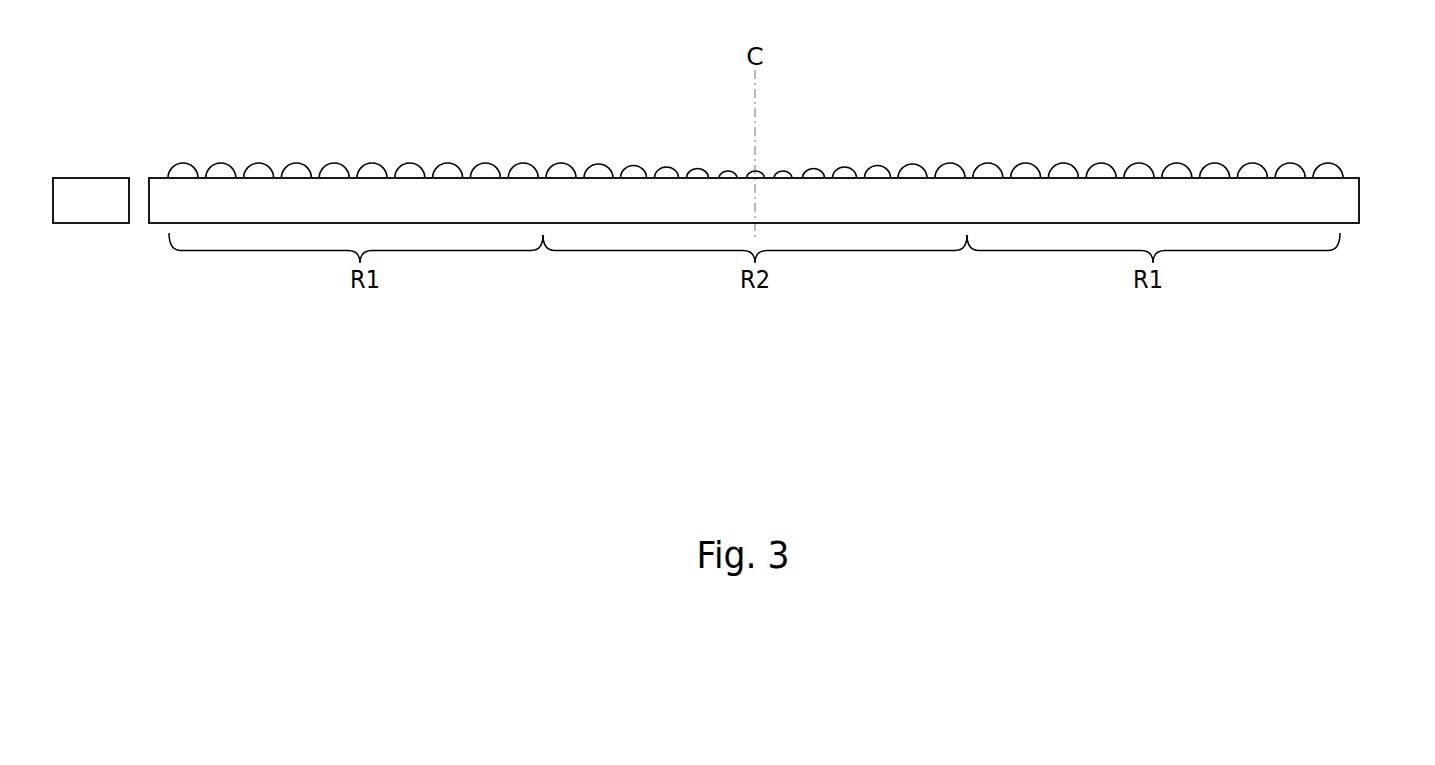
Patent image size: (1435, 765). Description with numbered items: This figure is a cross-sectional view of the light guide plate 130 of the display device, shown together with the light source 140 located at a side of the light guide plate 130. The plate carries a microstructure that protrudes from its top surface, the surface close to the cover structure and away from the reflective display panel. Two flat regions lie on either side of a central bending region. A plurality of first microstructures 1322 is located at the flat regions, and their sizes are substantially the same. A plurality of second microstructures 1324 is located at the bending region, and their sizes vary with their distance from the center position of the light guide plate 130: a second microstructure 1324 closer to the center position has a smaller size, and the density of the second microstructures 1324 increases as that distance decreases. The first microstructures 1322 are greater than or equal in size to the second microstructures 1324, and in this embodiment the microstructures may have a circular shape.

The light guide plate 130 is at (1352, 204).
The light source 140 is at (89, 193).
The first microstructures 1322 is at (412, 170).
The second microstructures 1324 is at (759, 171).